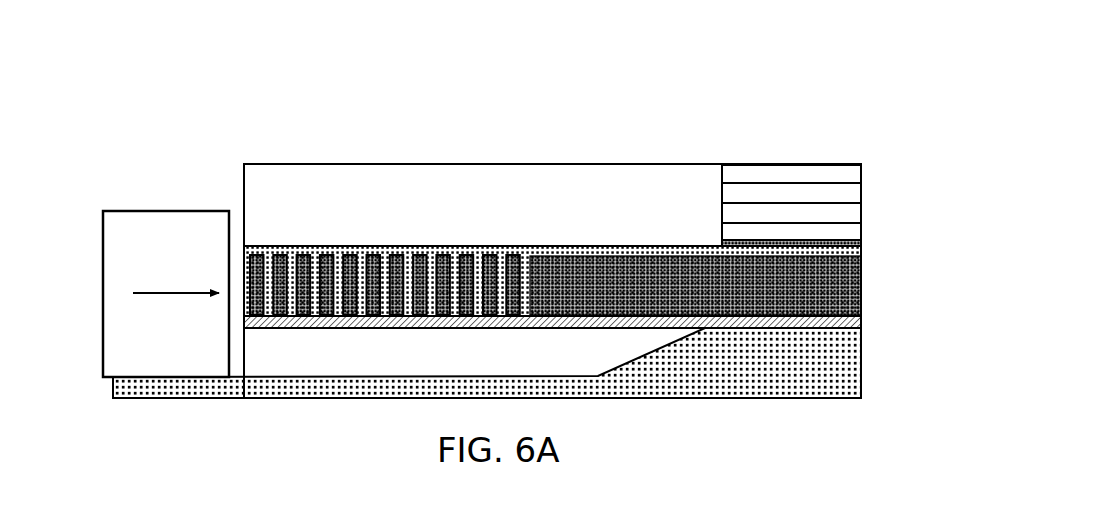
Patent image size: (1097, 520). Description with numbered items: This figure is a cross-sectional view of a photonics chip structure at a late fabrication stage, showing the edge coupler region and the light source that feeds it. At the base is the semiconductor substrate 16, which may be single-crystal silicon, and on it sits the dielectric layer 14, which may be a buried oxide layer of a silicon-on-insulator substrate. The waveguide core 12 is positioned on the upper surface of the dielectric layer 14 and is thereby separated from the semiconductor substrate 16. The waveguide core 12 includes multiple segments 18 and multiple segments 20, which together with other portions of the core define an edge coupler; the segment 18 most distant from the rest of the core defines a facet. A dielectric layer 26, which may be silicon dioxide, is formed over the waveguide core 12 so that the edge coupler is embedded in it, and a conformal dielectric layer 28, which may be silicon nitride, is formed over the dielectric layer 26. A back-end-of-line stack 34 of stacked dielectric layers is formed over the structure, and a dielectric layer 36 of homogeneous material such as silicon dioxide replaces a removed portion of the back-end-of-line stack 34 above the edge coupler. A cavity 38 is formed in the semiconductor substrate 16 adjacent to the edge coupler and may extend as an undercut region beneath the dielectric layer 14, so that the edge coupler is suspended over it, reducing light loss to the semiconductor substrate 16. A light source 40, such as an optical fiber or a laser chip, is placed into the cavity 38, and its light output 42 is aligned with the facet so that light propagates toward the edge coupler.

The waveguide core 12 is at (872, 291).
The dielectric layer 14 is at (815, 325).
The semiconductor substrate 16 is at (817, 372).
The segments 18 is at (348, 280).
The segments 20 is at (463, 285).
The dielectric layer 26 is at (808, 253).
The dielectric layer 28 is at (743, 242).
The back-end-of-line stack 34 is at (876, 151).
The dielectric layer 36 is at (287, 183).
The cavity 38 is at (307, 363).
The light source 40 is at (169, 258).
The light output 42 is at (173, 293).